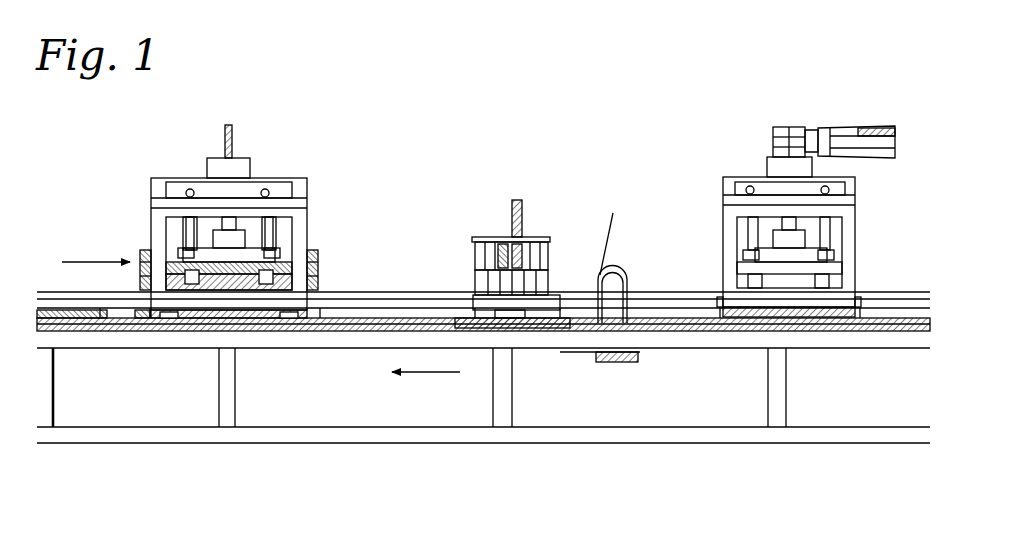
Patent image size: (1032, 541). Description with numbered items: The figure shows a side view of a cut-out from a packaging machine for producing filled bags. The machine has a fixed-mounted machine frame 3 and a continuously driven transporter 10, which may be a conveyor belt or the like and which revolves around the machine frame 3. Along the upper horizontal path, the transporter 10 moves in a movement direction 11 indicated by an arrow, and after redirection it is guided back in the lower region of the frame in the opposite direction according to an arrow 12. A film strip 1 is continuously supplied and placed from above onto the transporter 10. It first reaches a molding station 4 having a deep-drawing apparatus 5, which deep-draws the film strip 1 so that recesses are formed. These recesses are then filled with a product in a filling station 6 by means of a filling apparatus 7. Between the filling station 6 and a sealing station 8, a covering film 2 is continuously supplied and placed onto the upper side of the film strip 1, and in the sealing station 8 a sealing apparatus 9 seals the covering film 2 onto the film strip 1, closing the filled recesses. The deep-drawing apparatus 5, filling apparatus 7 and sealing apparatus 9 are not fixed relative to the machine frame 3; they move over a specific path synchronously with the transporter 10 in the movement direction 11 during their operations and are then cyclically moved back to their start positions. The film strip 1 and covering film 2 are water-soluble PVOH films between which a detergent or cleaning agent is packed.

The film strip 1 is at (56, 292).
The covering film 2 is at (602, 265).
The machine frame 3 is at (230, 392).
The molding station 4 is at (296, 156).
The deep-drawing apparatus 5 is at (262, 180).
The filling station 6 is at (497, 211).
The filling apparatus 7 is at (533, 236).
The sealing station 8 is at (732, 142).
The sealing apparatus 9 is at (790, 127).
The transporter 10 is at (385, 291).
The movement direction 11 is at (92, 261).
The arrow 12 is at (433, 375).